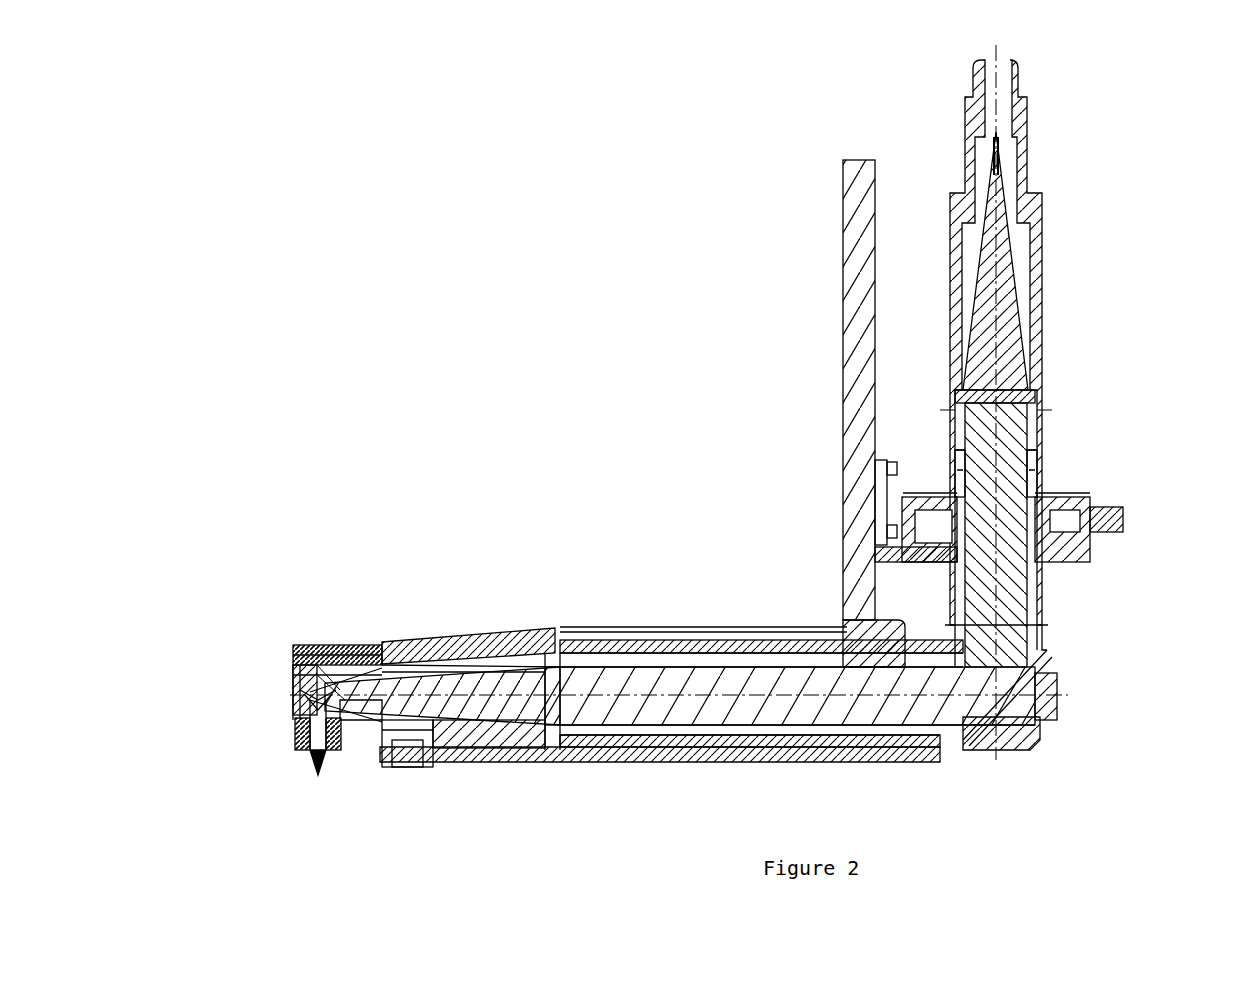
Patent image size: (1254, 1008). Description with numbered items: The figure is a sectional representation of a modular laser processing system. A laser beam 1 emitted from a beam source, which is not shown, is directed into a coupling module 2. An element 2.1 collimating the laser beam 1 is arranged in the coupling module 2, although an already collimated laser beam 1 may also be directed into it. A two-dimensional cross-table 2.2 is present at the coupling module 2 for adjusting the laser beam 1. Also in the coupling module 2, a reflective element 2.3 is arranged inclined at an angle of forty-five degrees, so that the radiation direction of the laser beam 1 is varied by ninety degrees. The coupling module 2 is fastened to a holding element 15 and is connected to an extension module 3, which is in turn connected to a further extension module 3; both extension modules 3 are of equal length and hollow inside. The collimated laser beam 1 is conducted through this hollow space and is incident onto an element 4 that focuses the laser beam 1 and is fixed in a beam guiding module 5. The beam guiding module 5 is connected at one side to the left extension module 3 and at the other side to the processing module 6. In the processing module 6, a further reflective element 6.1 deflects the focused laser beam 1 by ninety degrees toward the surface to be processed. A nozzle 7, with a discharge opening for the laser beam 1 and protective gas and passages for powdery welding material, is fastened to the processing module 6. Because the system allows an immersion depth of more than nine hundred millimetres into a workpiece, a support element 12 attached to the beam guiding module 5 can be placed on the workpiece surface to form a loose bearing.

The laser beam 1 is at (1000, 287).
The coupling module 2 is at (1147, 393).
The collimating element 2.1 is at (1020, 383).
The two-dimensional cross-table 2.2 is at (1073, 560).
The reflective element 2.3 is at (973, 747).
The extension module 3 is at (792, 628).
The focusing element 4 is at (570, 747).
The beam guiding module 5 is at (530, 633).
The processing module 6 is at (322, 640).
The further reflective element 6.1 is at (303, 692).
The nozzle 7 is at (333, 743).
The support element 12 is at (425, 758).
The holding element 15 is at (857, 307).